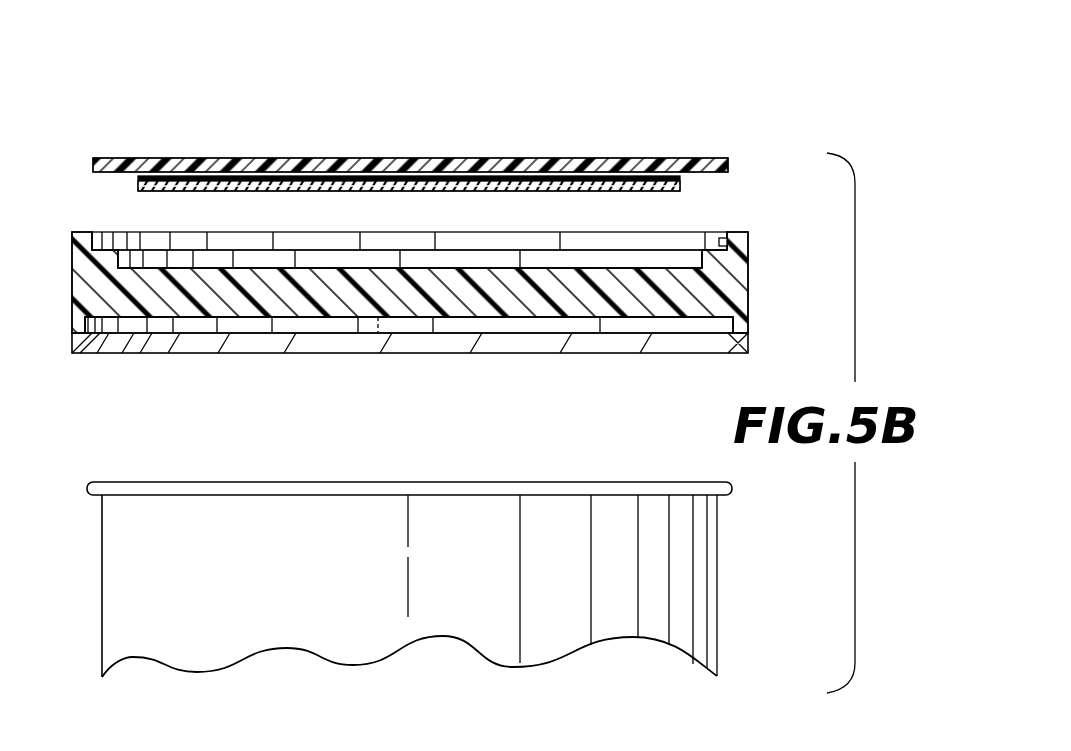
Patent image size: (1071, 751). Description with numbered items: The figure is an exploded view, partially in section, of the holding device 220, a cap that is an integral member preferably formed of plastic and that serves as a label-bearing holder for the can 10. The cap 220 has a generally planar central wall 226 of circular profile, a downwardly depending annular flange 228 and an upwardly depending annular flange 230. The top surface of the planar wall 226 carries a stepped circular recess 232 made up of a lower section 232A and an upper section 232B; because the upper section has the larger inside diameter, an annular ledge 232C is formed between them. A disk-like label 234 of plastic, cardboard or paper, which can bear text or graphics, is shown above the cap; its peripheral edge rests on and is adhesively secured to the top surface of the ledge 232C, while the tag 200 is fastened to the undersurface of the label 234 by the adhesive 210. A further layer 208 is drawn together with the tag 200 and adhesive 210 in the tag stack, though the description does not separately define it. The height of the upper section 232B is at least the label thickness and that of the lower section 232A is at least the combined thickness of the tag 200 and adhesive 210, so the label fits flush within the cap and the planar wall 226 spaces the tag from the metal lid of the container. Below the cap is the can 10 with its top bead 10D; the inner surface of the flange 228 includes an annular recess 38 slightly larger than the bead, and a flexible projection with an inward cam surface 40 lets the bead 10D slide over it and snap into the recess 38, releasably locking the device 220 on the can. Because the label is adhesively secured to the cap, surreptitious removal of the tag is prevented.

The tag 200 is at (378, 126).
The adhesive 210 is at (172, 171).
The metal foil layer 208 is at (260, 170).
The label 234 is at (443, 167).
The holding device 220 is at (655, 133).
The stepped circular recess 232 is at (305, 236).
The lower section of recess 232A is at (362, 260).
The upper section of recess 232B is at (668, 242).
The annular ledge 232C is at (717, 240).
The upwardly depending annular flange 230 is at (417, 292).
The downwardly depending annular flange 228 is at (72, 320).
The planar central wall 226 is at (437, 310).
The annular recess 38 is at (333, 328).
The cam surface 40 is at (93, 342).
The top bead 10D is at (158, 487).
The can 10 is at (383, 548).